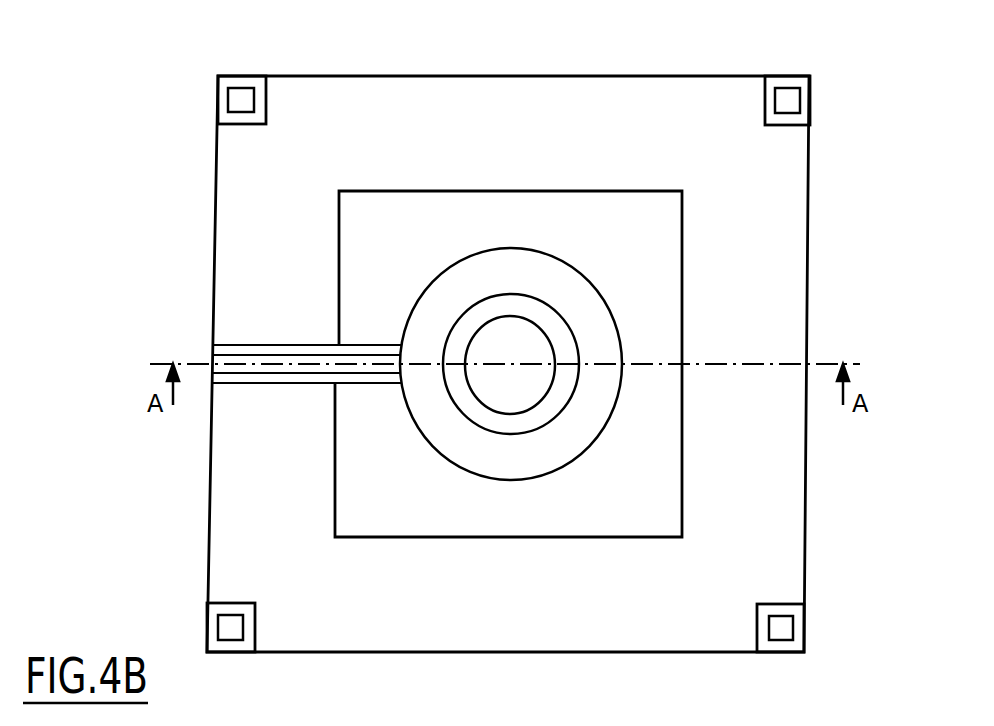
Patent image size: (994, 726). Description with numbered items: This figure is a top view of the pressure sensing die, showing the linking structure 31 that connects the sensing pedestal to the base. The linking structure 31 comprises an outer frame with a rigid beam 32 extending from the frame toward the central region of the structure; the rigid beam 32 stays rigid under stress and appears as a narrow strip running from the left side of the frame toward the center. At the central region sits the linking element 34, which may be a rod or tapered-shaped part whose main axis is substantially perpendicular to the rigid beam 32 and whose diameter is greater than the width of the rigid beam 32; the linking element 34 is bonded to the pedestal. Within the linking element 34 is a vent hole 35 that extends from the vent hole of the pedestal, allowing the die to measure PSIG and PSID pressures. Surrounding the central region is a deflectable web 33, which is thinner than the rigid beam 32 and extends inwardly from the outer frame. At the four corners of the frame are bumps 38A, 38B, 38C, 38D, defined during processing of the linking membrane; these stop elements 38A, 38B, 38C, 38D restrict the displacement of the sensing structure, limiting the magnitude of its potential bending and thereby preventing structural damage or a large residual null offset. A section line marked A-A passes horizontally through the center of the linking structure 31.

The linking structure 31 is at (778, 236).
The rigid beam 32 is at (358, 365).
The deflectable web 33 is at (622, 233).
The linking element 34 is at (463, 275).
The vent hole 35 is at (511, 350).
The bump 38A is at (238, 95).
The bump 38B is at (790, 100).
The bump 38C is at (783, 630).
The bump 38D is at (230, 632).